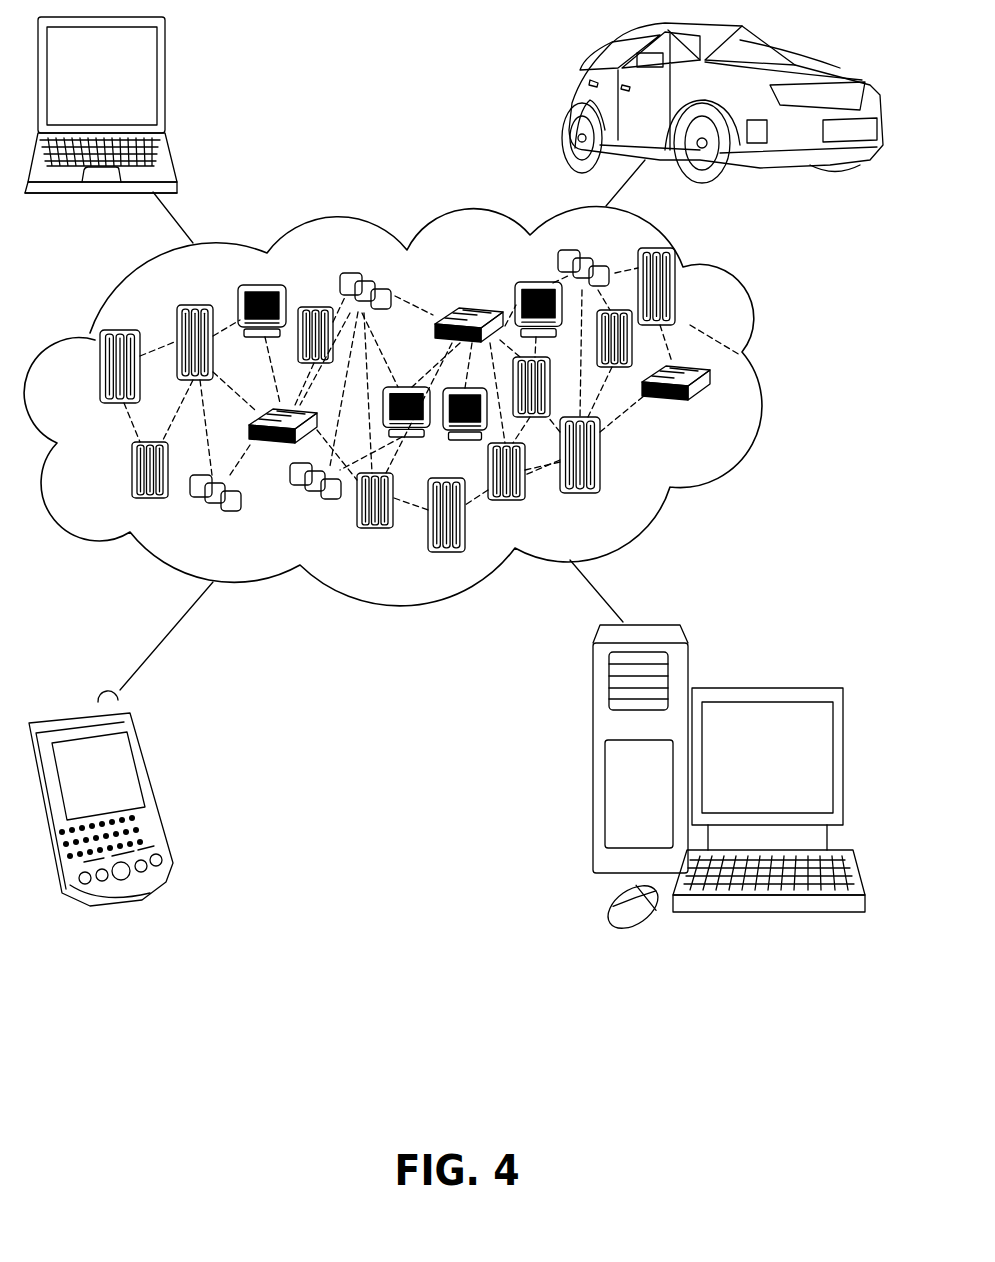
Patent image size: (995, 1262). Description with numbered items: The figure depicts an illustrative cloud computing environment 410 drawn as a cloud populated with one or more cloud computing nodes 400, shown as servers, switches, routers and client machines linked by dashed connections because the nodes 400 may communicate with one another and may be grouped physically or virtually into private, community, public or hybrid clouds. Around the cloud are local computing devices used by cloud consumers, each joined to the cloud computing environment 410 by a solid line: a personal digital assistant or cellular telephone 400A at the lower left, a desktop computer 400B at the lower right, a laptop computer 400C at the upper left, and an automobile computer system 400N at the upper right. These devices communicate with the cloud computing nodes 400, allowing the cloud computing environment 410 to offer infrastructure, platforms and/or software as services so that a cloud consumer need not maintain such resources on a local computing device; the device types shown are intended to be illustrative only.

The cloud computing nodes 400 is at (467, 425).
The cloud computing environment 410 is at (768, 380).
The personal digital assistant or cellular telephone 400A is at (153, 790).
The desktop computer 400B is at (765, 688).
The laptop computer 400C is at (165, 87).
The automobile computer system 400N is at (567, 105).